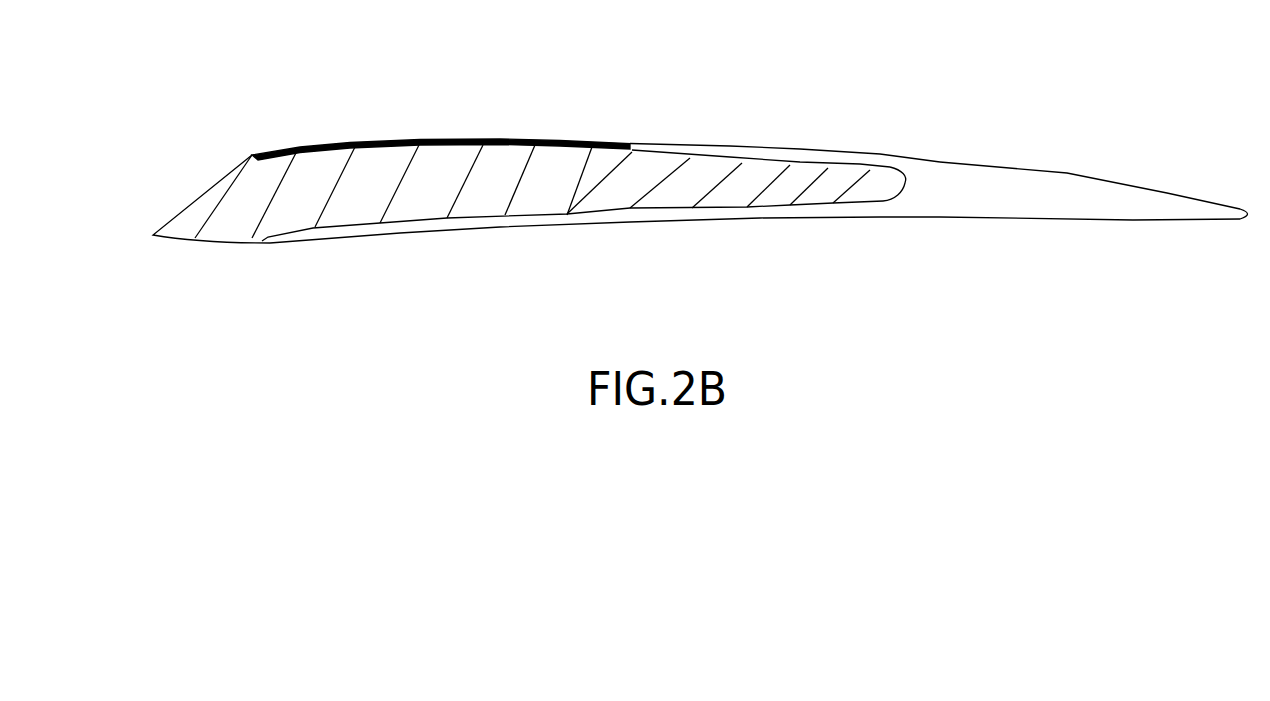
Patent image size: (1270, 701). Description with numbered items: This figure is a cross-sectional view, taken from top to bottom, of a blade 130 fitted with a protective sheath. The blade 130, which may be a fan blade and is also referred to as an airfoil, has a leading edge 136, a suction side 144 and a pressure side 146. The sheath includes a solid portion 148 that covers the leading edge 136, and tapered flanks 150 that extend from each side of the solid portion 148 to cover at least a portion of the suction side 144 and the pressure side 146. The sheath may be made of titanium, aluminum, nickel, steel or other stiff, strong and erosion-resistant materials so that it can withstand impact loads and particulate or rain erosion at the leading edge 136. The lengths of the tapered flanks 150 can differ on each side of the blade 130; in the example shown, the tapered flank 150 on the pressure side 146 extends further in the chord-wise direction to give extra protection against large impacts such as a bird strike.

The blade 130 is at (535, 192).
The leading edge 136 is at (894, 162).
The suction side 144 is at (207, 243).
The pressure side 146 is at (463, 137).
The solid portion 148 is at (1025, 195).
The tapered flanks 150 is at (758, 150).